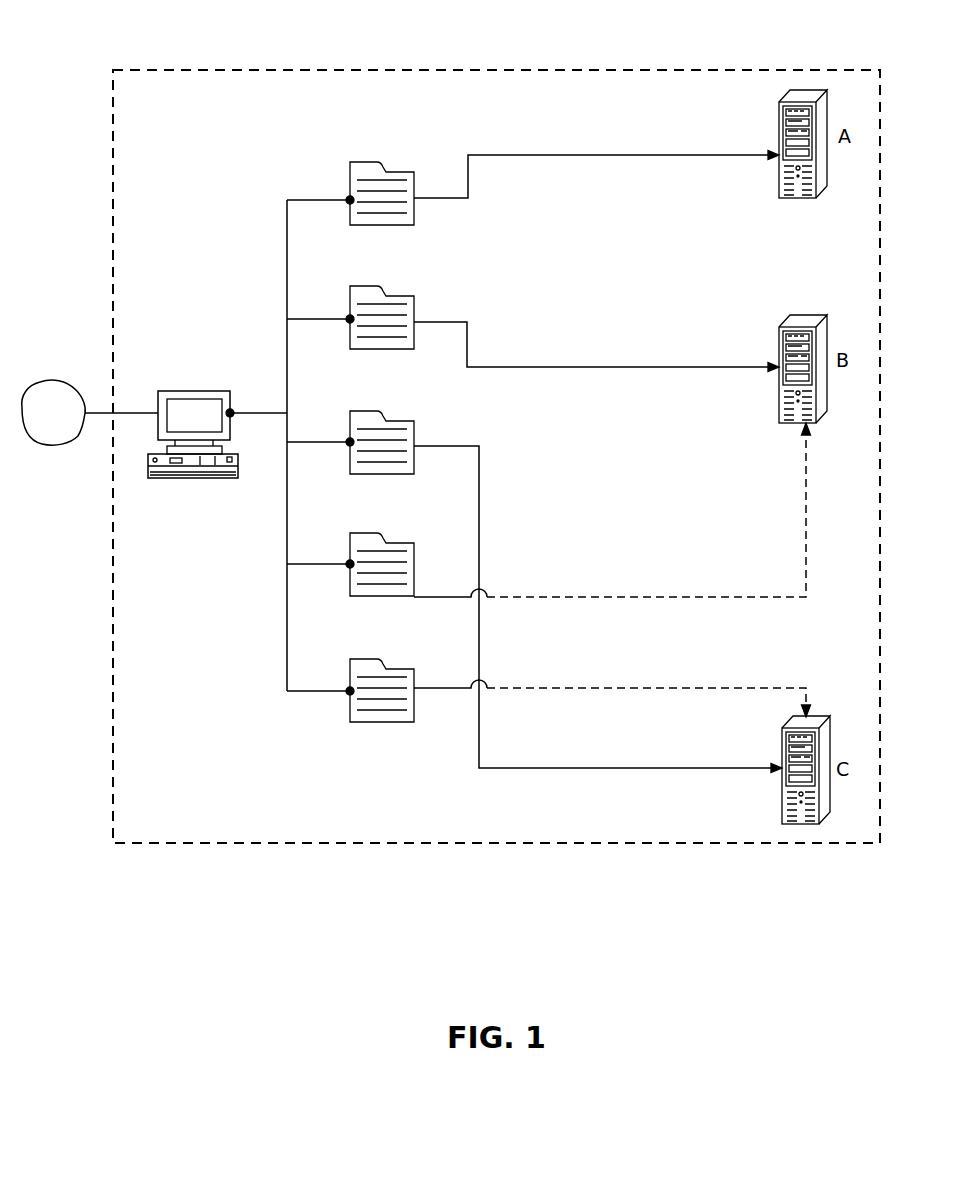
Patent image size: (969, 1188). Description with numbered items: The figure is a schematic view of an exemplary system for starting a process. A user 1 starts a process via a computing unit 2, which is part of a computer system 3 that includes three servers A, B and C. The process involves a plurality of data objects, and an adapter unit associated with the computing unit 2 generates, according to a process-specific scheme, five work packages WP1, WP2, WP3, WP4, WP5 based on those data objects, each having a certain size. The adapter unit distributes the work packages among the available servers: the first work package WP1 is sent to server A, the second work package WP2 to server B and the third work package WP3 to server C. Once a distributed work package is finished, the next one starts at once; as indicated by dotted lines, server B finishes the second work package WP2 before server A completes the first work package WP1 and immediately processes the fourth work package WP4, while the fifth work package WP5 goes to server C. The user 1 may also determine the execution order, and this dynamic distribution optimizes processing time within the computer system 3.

The user 1 is at (50, 383).
The computing unit 2 is at (198, 391).
The computer system 3 is at (730, 70).
The first work package WP1 is at (384, 171).
The second work package WP2 is at (384, 295).
The third work package WP3 is at (384, 420).
The fourth work package WP4 is at (384, 542).
The fifth work package WP5 is at (384, 668).